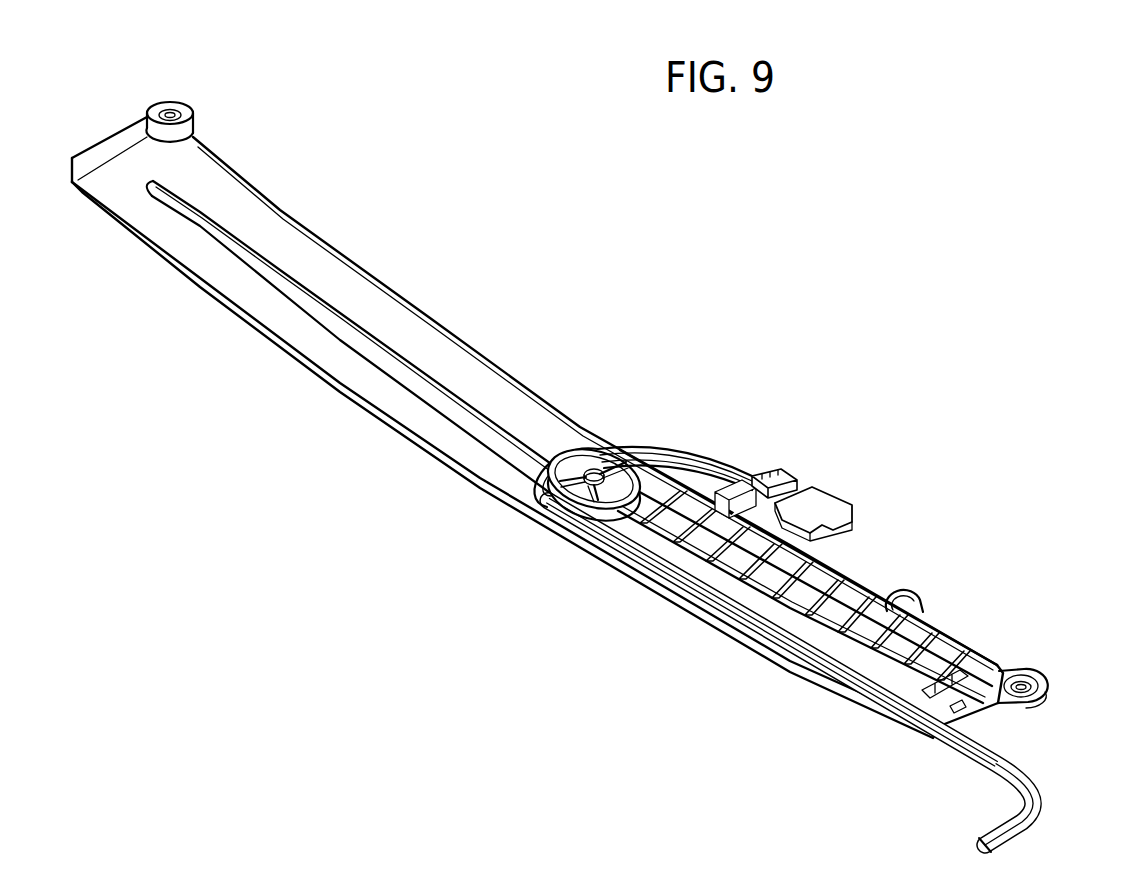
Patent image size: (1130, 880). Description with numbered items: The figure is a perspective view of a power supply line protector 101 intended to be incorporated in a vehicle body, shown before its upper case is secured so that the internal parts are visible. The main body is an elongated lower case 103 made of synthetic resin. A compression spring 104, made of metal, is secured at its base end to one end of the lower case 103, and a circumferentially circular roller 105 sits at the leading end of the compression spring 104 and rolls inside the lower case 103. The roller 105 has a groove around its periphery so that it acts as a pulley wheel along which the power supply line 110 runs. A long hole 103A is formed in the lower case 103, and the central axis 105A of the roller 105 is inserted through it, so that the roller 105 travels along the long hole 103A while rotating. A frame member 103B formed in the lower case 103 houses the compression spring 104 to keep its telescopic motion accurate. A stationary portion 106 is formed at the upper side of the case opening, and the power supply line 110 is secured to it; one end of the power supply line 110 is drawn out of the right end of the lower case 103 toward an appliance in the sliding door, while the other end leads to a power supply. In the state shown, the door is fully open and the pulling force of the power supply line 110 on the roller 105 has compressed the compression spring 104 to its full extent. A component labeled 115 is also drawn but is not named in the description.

The power supply line protector 101 is at (222, 163).
The lower case 103 is at (212, 302).
The long hole 103A is at (285, 280).
The frame member 103B is at (923, 610).
The compression spring 104 is at (805, 600).
The roller 105 is at (496, 404).
The central axis 105A is at (597, 468).
The stationary portion 106 is at (762, 470).
The power supply line 110 is at (993, 753).
The plate 115 is at (828, 500).